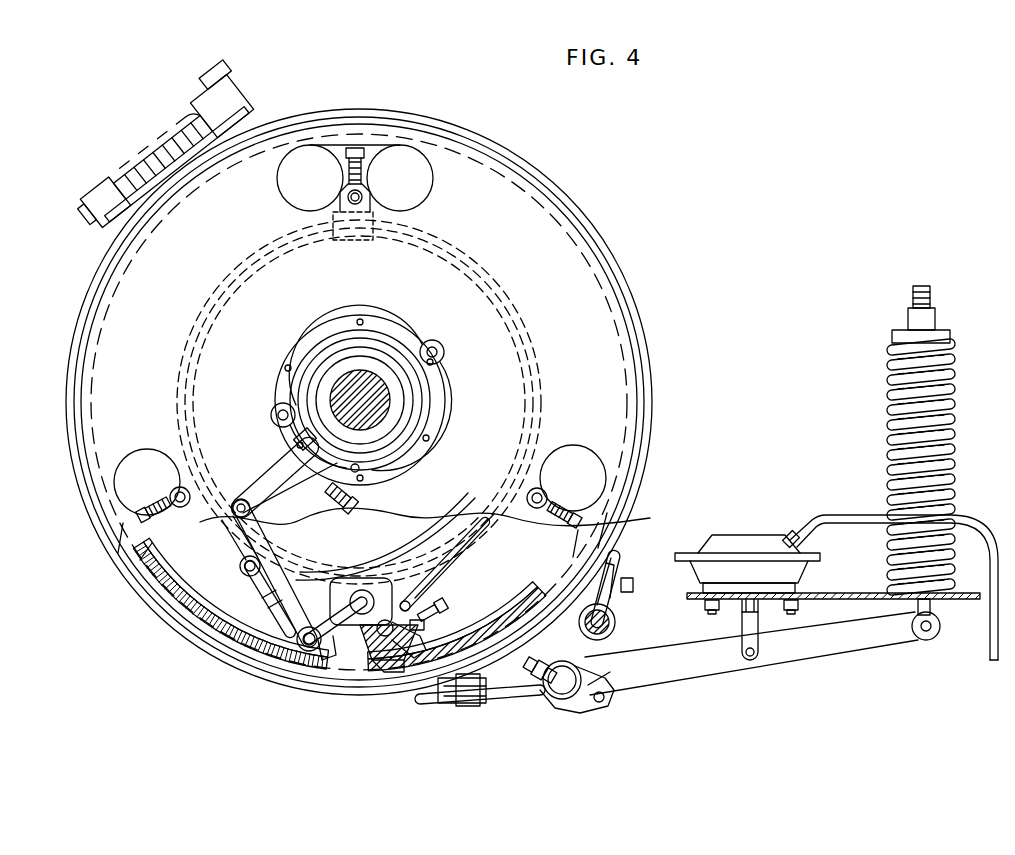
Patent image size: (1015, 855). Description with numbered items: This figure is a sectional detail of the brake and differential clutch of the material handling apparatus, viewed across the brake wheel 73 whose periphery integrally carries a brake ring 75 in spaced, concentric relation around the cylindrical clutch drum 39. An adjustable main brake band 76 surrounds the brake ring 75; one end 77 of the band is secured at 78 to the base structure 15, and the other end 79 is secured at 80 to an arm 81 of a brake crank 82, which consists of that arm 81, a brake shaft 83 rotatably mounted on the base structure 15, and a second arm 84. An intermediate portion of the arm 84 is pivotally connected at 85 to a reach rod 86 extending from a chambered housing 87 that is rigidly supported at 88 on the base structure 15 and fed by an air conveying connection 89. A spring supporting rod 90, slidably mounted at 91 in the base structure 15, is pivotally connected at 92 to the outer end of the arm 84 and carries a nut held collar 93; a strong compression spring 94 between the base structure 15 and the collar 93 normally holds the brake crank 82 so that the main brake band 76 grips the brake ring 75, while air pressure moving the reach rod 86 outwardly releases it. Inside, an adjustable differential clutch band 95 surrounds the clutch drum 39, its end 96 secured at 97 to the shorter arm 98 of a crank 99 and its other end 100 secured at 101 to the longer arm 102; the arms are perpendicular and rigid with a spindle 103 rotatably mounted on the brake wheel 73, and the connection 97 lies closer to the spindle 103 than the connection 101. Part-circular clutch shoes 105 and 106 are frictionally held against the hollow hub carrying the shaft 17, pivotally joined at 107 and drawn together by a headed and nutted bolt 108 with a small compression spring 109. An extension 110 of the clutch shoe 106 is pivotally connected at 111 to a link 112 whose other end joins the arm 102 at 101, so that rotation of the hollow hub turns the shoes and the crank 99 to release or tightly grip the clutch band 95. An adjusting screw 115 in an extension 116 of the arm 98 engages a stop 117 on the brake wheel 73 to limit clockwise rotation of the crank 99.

The base structure 15 is at (845, 593).
The shaft 17 is at (400, 402).
The cylindrical clutch drum 39 is at (392, 568).
The brake wheel 73 is at (172, 600).
The brake ring 75 is at (517, 628).
The main brake band 76 is at (646, 345).
The end of brake band 77 is at (623, 576).
The securing connection 78 is at (617, 626).
The other end of brake band 79 is at (505, 700).
The securing connection 80 is at (605, 698).
The arm 81 is at (612, 674).
The brake crank 82 is at (668, 682).
The brake shaft 83 is at (560, 693).
The arm 84 is at (710, 664).
The pivotal connection 85 is at (756, 656).
The reach rod 86 is at (742, 628).
The chambered housing 87 is at (770, 540).
The support connection 88 is at (800, 608).
The air conveying connection 89 is at (830, 516).
The spring supporting rod 90 is at (890, 432).
The slidable mounting 91 is at (932, 606).
The pivotal connection 92 is at (927, 632).
The nut held collar 93 is at (892, 334).
The strong compression spring 94 is at (890, 389).
The differential clutch band 95 is at (492, 523).
The end of clutch band 96 is at (412, 604).
The securing connection 97 is at (384, 640).
The arm 98 is at (440, 608).
The crank 99 is at (308, 652).
The other end of clutch band 100 is at (248, 575).
The pivotal connection 101 is at (297, 638).
The arm 102 is at (324, 660).
The spindle 103 is at (352, 598).
The clutch shoe 105 is at (292, 388).
The clutch shoe 106 is at (357, 470).
The pivotal connection 107 is at (440, 346).
The headed and nutted bolt 108 is at (295, 446).
The small compression spring 109 is at (330, 490).
The extension 110 is at (298, 475).
The pivotal connection 111 is at (252, 513).
The link 112 is at (280, 560).
The adjusting screw 115 is at (426, 625).
The extension 116 is at (420, 642).
The stop 117 is at (402, 672).